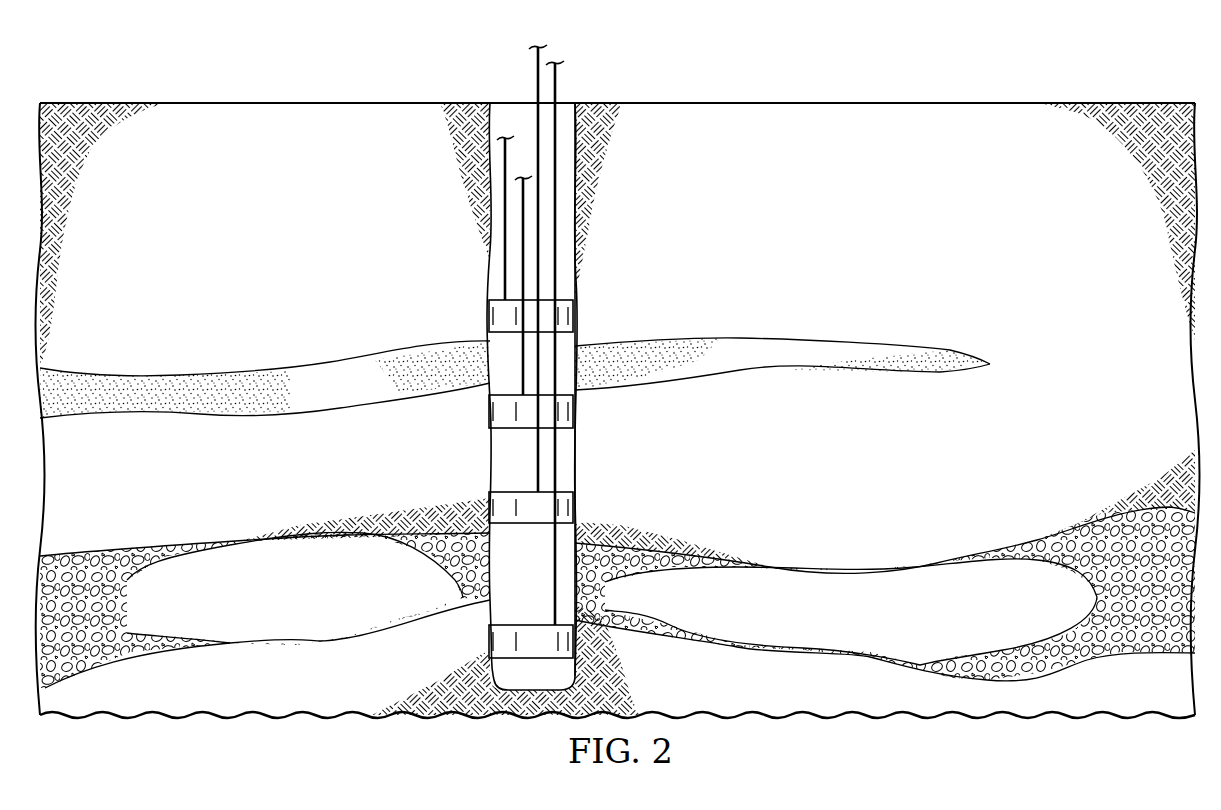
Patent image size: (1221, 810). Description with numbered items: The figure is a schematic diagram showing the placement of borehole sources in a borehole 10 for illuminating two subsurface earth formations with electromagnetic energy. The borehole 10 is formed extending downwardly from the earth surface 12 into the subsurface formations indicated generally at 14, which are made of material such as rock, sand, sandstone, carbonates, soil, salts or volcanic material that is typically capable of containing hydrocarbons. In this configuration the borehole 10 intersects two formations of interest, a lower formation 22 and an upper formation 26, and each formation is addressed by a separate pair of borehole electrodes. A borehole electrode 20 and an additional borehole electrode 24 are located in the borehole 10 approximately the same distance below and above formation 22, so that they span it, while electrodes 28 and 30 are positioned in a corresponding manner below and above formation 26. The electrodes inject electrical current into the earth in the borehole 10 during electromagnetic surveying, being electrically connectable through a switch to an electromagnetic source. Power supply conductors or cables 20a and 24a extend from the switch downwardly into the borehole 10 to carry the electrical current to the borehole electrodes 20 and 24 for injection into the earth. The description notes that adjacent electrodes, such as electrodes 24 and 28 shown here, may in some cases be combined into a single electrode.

The borehole 10 is at (492, 115).
The earth surface 12 is at (841, 103).
The subsurface formations 14 is at (273, 250).
The borehole electrode 20 is at (490, 630).
The power supply cable 20a is at (558, 443).
The formation of interest 22 is at (289, 601).
The borehole electrode 24 is at (570, 484).
The power supply cable 24a is at (537, 457).
The formation 26 is at (346, 393).
The electrode 28 is at (490, 443).
The electrode 30 is at (573, 291).